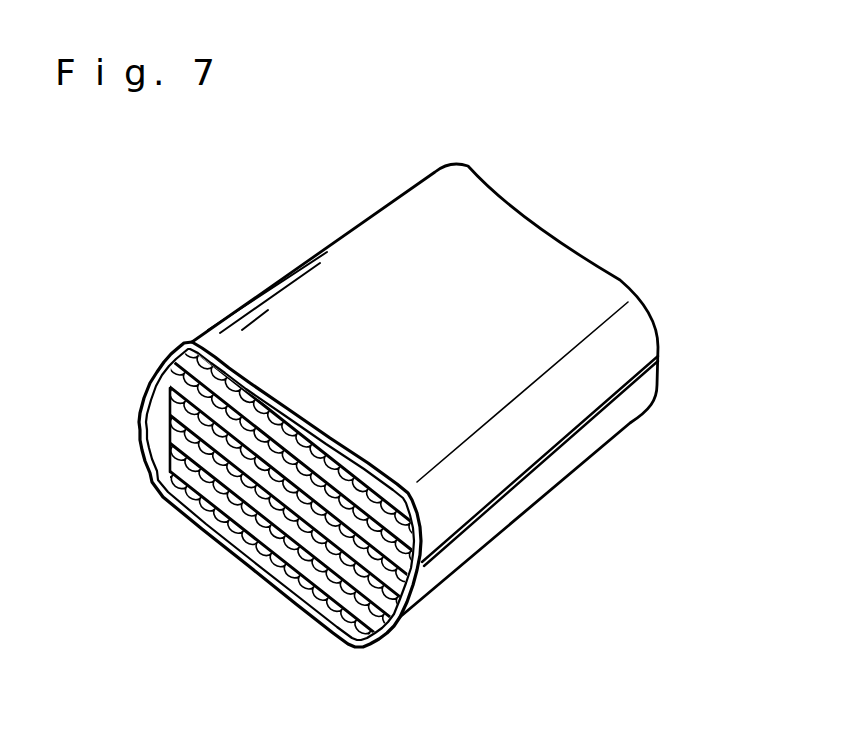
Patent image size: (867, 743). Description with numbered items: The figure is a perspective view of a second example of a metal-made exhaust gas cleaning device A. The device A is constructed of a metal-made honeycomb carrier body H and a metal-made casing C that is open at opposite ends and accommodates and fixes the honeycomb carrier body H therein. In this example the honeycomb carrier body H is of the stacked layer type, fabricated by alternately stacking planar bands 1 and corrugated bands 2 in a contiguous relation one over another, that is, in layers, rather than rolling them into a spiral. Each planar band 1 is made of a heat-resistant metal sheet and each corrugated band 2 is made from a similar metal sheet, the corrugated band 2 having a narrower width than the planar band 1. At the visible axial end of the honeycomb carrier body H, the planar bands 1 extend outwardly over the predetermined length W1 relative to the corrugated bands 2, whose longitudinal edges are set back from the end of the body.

The exhaust gas cleaning device A is at (630, 248).
The casing C is at (166, 352).
The honeycomb carrier body H is at (263, 492).
The planar band 1 is at (232, 523).
The corrugated band 2 is at (268, 553).
The predetermined length W1 is at (398, 593).